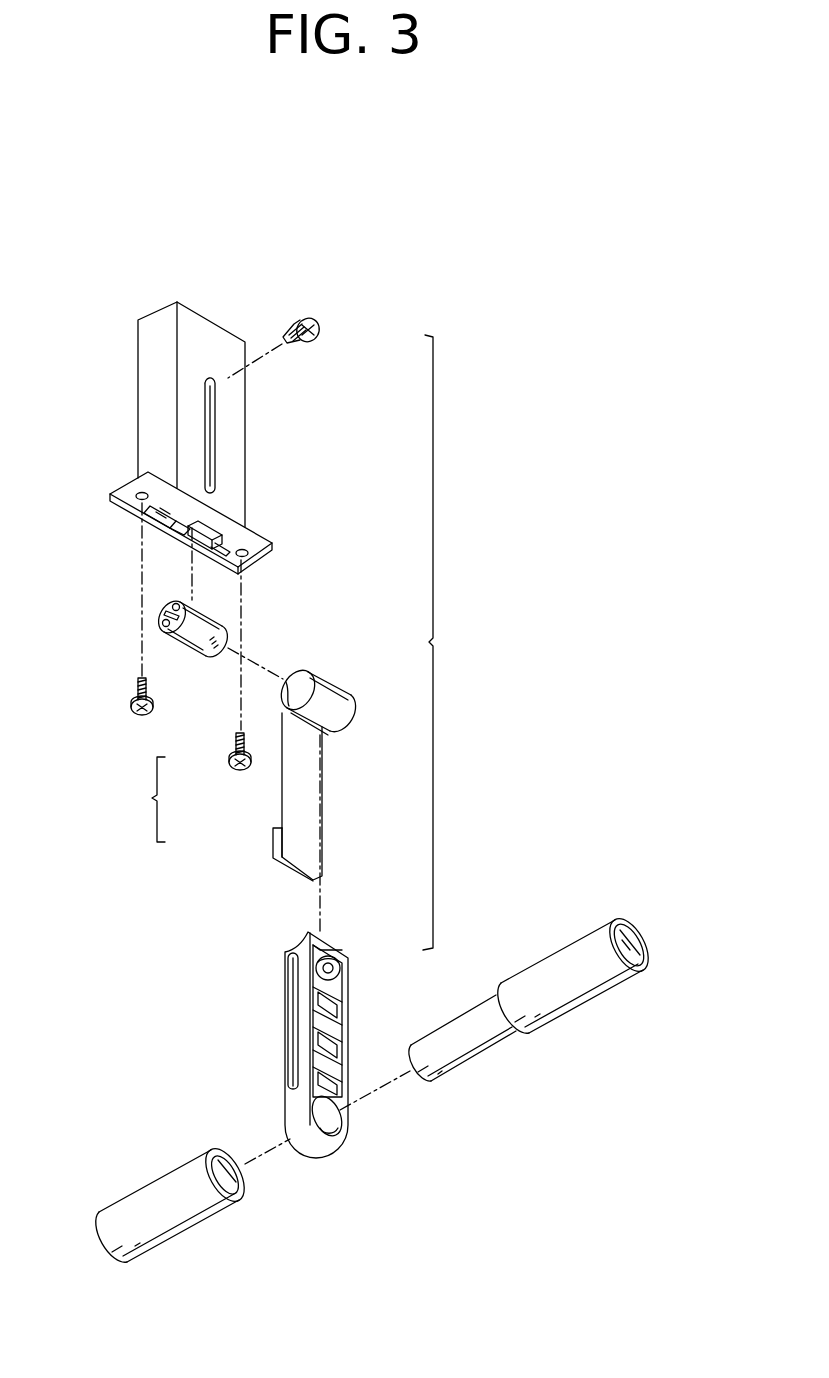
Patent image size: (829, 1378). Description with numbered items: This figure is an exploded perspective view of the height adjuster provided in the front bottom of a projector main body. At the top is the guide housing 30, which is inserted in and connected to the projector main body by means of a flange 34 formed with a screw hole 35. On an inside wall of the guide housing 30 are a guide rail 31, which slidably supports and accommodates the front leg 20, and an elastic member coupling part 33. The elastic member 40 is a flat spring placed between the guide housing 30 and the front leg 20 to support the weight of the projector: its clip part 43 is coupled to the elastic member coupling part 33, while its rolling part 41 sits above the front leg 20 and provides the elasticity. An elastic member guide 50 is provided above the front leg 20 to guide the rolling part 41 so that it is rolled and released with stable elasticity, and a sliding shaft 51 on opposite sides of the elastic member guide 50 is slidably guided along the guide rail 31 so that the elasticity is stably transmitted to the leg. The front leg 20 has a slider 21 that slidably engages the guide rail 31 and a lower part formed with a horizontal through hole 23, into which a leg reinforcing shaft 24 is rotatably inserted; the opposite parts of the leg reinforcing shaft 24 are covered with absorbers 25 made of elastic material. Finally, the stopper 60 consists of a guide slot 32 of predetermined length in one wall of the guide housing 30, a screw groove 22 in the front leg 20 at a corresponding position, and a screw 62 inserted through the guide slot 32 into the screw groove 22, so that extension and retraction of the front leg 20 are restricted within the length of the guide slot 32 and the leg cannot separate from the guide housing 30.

The front leg 20 is at (272, 944).
The slider 21 is at (289, 1063).
The screw groove 22 is at (340, 963).
The through hole 23 is at (338, 1138).
The leg reinforcing shaft 24 is at (478, 1057).
The absorber 25 is at (577, 1016).
The guide housing 30 is at (128, 388).
The guide rail 31 is at (212, 548).
The guide slot 32 is at (216, 451).
The elastic member coupling part 33 is at (176, 530).
The flange 34 is at (122, 486).
The screw hole 35 is at (134, 497).
The elastic member 40 is at (121, 811).
The rolling part 41 is at (283, 703).
The clip part 43 is at (273, 850).
The elastic member guide 50 is at (172, 647).
The sliding shaft 51 is at (159, 614).
The stopper 60 is at (446, 655).
The screw 62 is at (319, 322).